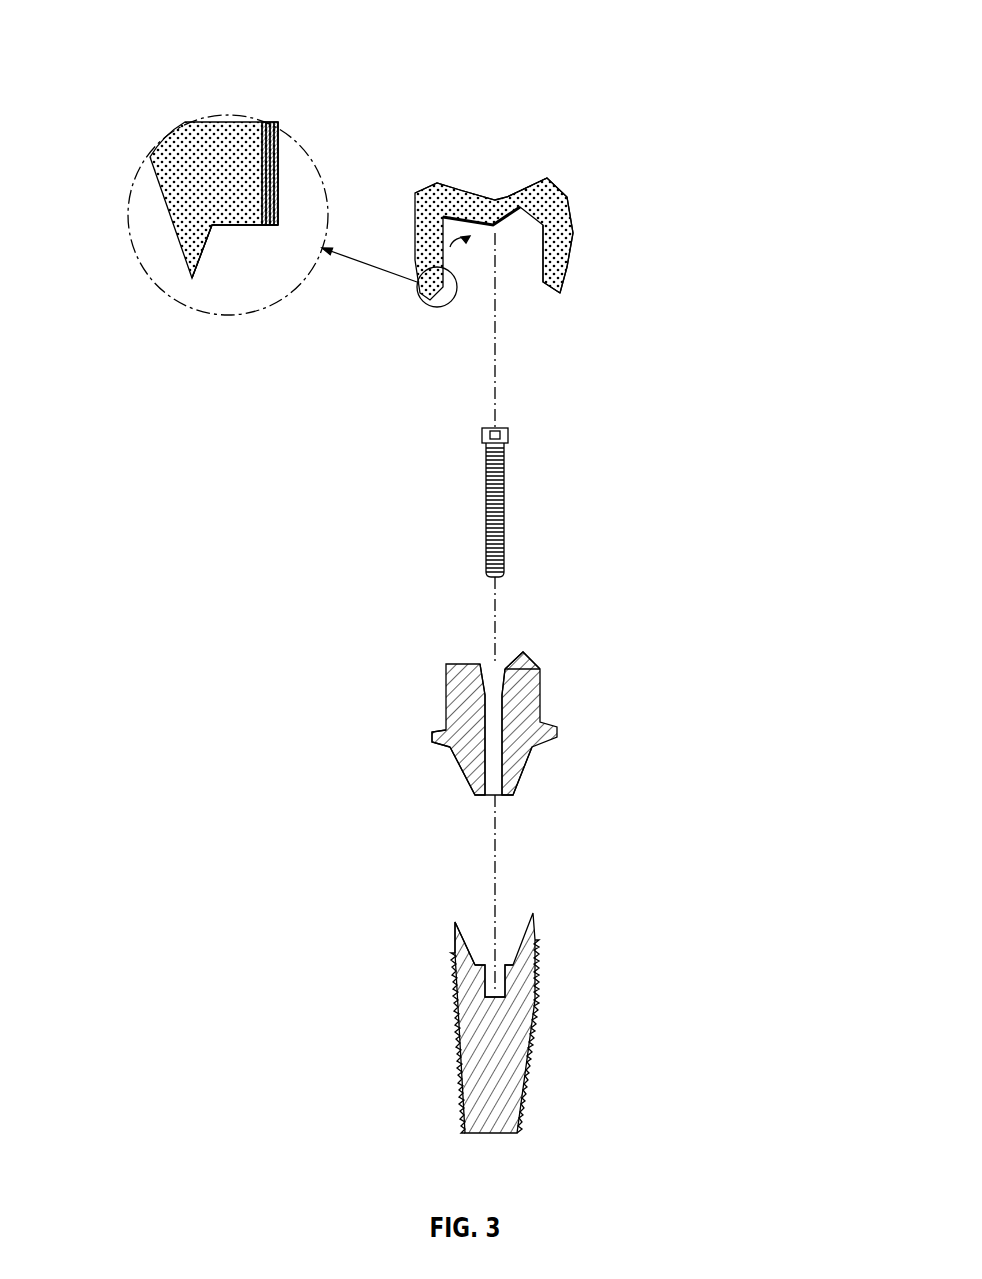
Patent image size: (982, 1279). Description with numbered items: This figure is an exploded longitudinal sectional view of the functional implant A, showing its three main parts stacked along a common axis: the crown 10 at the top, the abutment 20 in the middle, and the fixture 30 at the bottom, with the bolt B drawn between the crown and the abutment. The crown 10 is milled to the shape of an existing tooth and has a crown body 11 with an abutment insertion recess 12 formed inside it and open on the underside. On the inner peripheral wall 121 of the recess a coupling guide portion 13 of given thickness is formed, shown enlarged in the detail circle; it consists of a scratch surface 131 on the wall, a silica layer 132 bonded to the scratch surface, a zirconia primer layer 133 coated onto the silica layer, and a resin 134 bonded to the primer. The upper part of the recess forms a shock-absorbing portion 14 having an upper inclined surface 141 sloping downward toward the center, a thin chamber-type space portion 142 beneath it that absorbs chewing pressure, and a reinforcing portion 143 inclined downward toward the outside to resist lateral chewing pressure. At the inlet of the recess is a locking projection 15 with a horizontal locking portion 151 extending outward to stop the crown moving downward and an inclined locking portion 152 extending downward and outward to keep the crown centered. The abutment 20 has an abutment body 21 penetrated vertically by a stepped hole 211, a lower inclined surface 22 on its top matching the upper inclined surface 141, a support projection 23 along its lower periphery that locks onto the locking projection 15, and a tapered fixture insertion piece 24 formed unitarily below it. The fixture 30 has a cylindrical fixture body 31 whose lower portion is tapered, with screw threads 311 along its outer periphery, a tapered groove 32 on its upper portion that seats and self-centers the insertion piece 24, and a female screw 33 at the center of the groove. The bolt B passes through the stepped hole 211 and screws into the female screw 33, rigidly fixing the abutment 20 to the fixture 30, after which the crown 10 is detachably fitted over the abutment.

The crown 10 is at (394, 234).
The crown body 11 is at (567, 232).
The abutment insertion recess 12 is at (514, 273).
The coupling guide portion 13 is at (292, 112).
The scratch surface 131 is at (262, 127).
The silica layer 132 is at (265, 122).
The zirconia primer layer 133 is at (285, 133).
The resin 134 is at (316, 137).
The shock-absorbing portion 14 is at (430, 187).
The upper inclined surface 141 is at (495, 200).
The space portion 142 is at (505, 190).
The reinforcing portion 143 is at (540, 197).
The inner peripheral wall 121 is at (253, 177).
The locking projection 15 is at (258, 319).
The horizontal locking portion 151 is at (247, 227).
The inclined locking portion 152 is at (210, 250).
The abutment 20 is at (513, 703).
The abutment body 21 is at (455, 693).
The stepped hole 211 is at (540, 670).
The lower inclined surface 22 is at (470, 667).
The support projection 23 is at (432, 735).
The tapered fixture insertion piece 24 is at (475, 770).
The fixture 30 is at (501, 1023).
The fixture body 31 is at (483, 1055).
The screw threads 311 is at (457, 1008).
The tapered groove 32 is at (465, 950).
The female screw 33 is at (485, 975).
The functional implant A is at (498, 206).
The bolt B is at (524, 500).